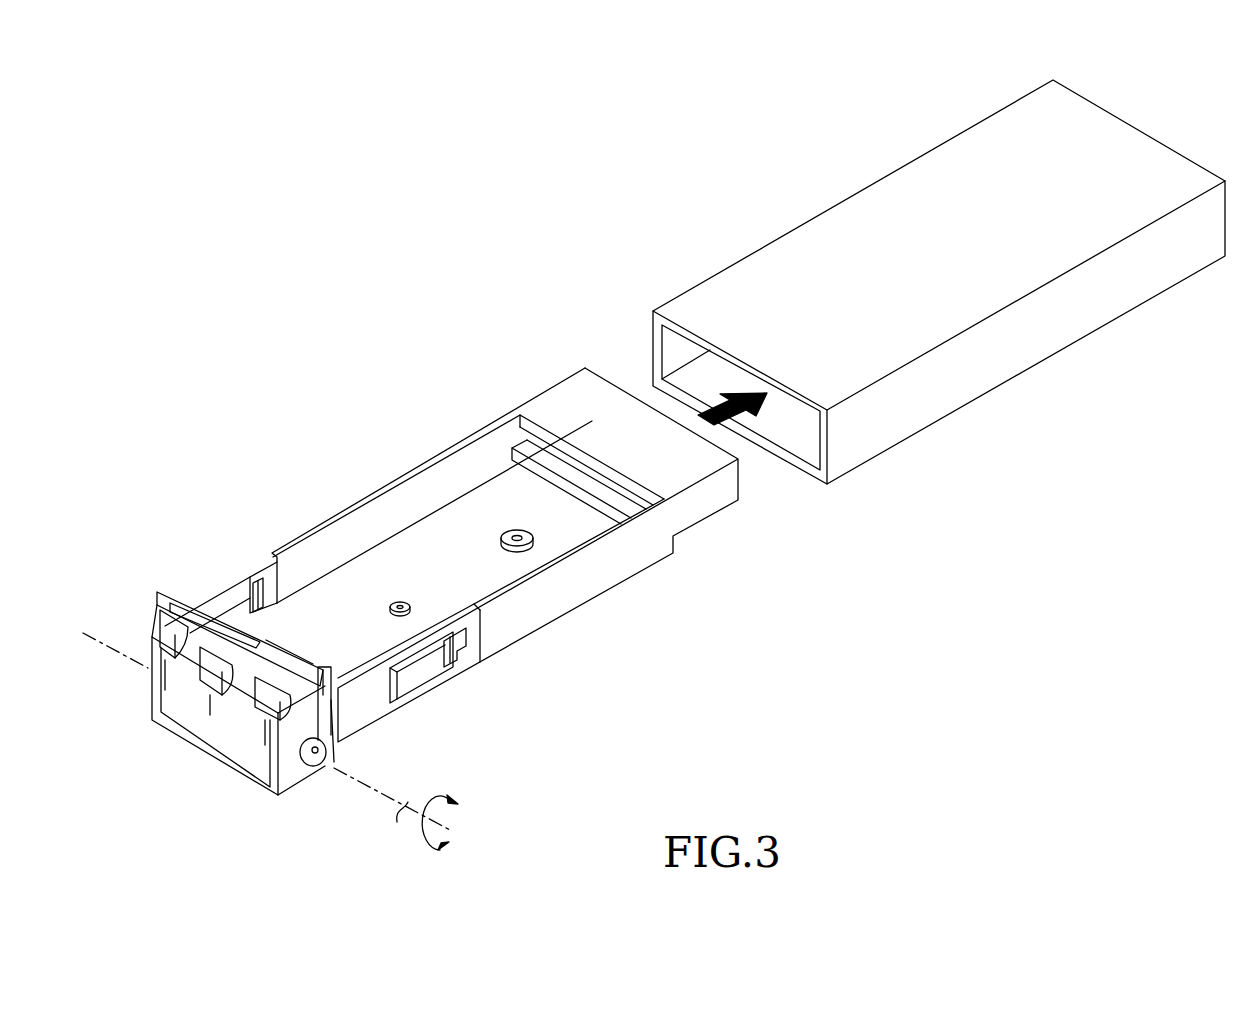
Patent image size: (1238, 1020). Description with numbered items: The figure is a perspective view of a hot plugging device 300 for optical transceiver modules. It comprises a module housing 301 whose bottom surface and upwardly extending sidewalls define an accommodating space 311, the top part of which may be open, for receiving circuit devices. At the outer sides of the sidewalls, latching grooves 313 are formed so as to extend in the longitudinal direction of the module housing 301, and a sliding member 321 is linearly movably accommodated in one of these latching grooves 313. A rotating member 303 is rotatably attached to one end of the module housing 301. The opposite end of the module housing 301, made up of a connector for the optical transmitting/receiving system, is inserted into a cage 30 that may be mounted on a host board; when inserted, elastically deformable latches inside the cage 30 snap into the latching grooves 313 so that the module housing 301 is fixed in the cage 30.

The cage 30 is at (1006, 370).
The optical transceiver module 300 is at (525, 329).
The module housing 301 is at (658, 548).
The rotating member 303 is at (321, 760).
The accommodating space 311 is at (443, 503).
The latching grooves 313 is at (463, 648).
The sliding member 321 is at (428, 673).